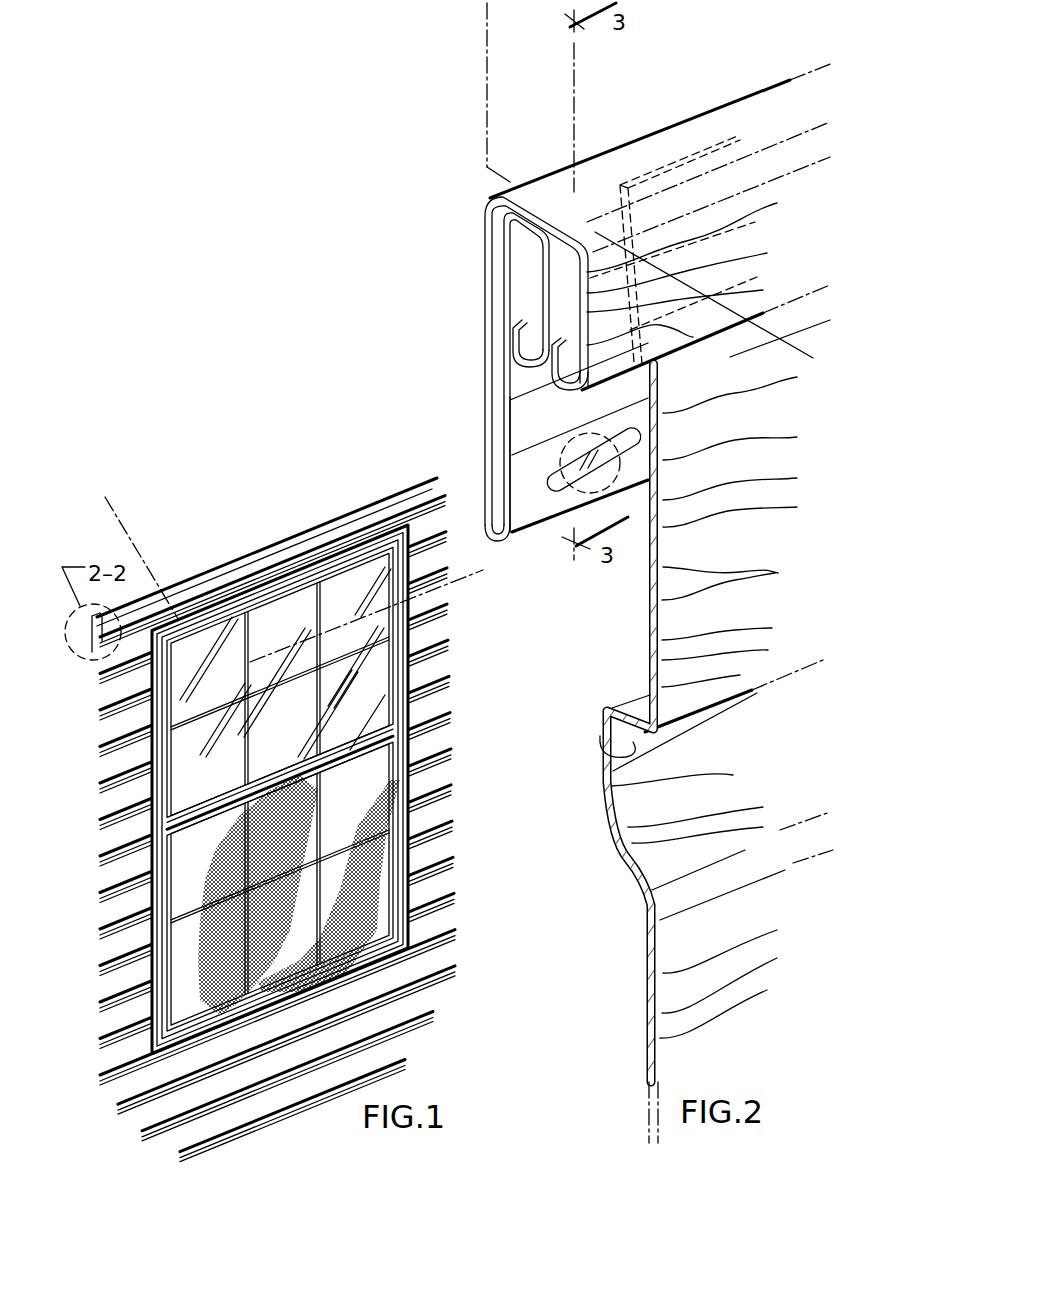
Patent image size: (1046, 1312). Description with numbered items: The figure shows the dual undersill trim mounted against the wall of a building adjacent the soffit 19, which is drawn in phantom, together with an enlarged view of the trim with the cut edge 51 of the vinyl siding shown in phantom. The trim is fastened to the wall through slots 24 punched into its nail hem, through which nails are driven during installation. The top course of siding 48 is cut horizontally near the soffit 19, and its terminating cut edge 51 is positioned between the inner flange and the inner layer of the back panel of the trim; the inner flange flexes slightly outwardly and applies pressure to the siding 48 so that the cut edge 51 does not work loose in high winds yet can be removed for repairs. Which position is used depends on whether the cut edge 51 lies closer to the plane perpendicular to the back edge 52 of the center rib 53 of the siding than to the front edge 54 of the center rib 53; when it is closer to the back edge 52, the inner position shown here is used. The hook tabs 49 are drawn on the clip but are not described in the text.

The soffit 19 is at (510, 180).
The slots 24 is at (548, 487).
The siding 48 is at (650, 414).
The hook tabs 49 is at (605, 279).
The cut edge 51 is at (674, 162).
The back edge 52 is at (607, 712).
The center rib 53 is at (632, 717).
The front edge 54 is at (633, 752).